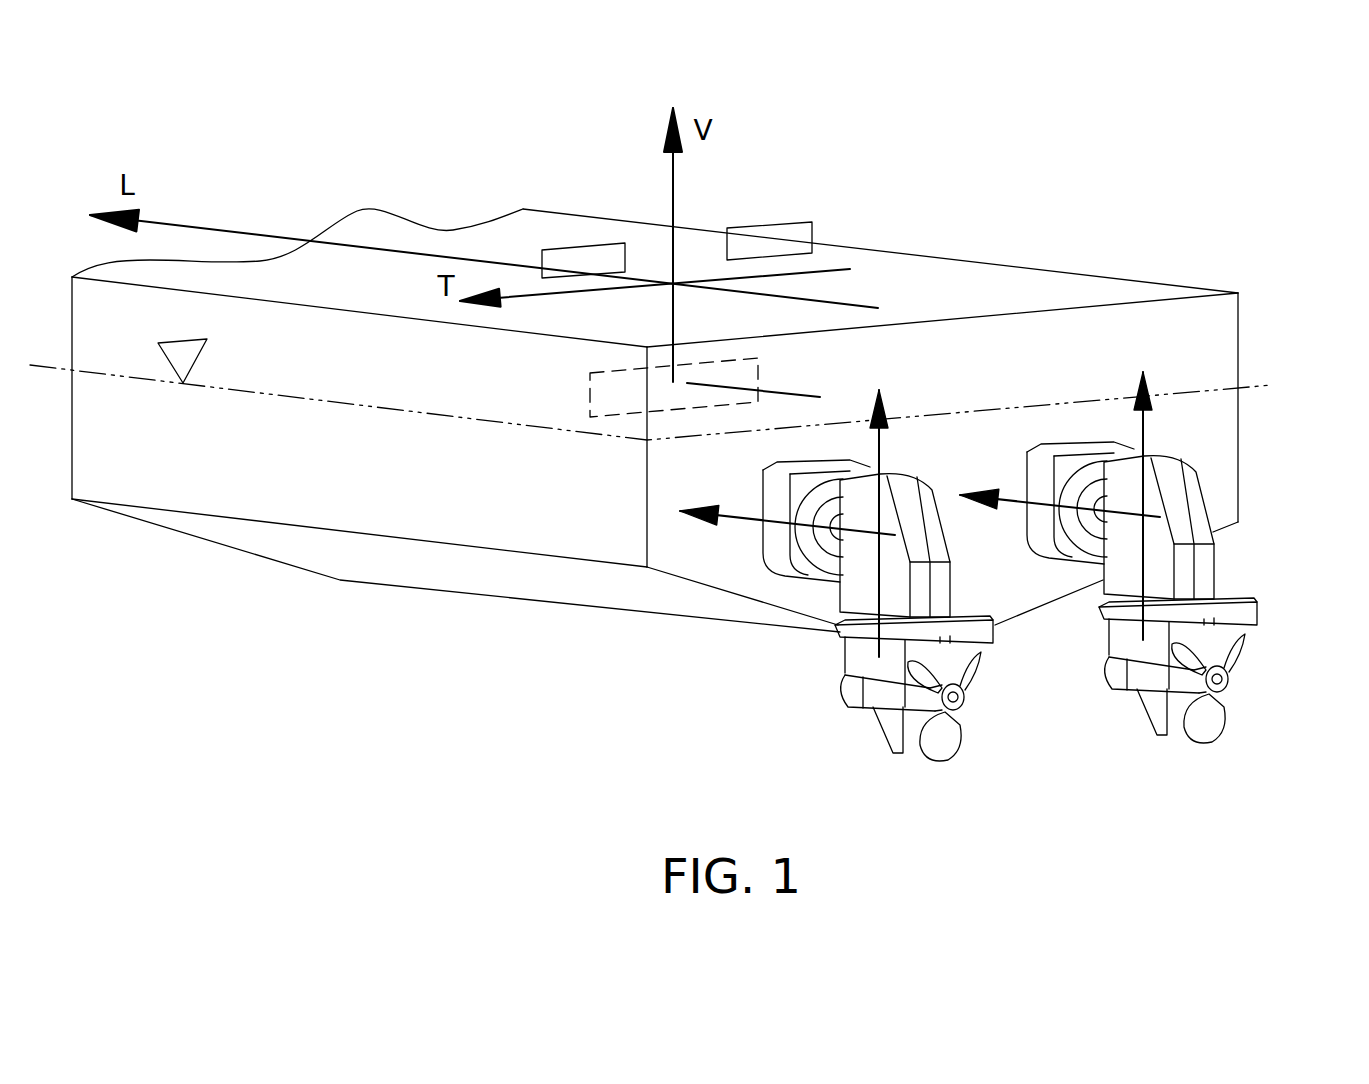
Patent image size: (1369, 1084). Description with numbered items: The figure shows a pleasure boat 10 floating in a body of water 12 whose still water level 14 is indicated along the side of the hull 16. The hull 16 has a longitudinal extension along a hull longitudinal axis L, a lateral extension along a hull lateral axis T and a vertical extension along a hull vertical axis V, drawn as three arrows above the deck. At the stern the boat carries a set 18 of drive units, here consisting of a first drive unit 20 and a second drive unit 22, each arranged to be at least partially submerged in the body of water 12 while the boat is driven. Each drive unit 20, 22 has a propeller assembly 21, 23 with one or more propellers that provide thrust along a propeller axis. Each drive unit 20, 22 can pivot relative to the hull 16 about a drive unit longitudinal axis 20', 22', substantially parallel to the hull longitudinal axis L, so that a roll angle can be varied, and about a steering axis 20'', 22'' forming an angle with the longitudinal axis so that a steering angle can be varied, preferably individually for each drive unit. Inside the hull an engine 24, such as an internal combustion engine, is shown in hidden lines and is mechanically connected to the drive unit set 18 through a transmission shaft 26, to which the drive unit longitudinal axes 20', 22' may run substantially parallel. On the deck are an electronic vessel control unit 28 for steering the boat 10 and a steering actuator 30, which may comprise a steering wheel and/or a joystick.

The boat 10 is at (1105, 238).
The body of water 12 is at (207, 790).
The still water level 14 is at (302, 396).
The hull 16 is at (885, 276).
The set of drive units 18 is at (1182, 848).
The first drive unit 20 is at (865, 623).
The drive unit longitudinal axis 20' is at (736, 612).
The steering axis 20'' is at (777, 572).
The propeller assembly 21 is at (987, 722).
The second drive unit 22 is at (1190, 588).
The drive unit longitudinal axis 22' is at (1132, 357).
The steering axis 22'' is at (1247, 454).
The propeller assembly 23 is at (1250, 698).
The engine 24 is at (590, 383).
The transmission shaft 26 is at (798, 392).
The electronic vessel control unit 28 is at (777, 220).
The steering actuator 30 is at (580, 242).